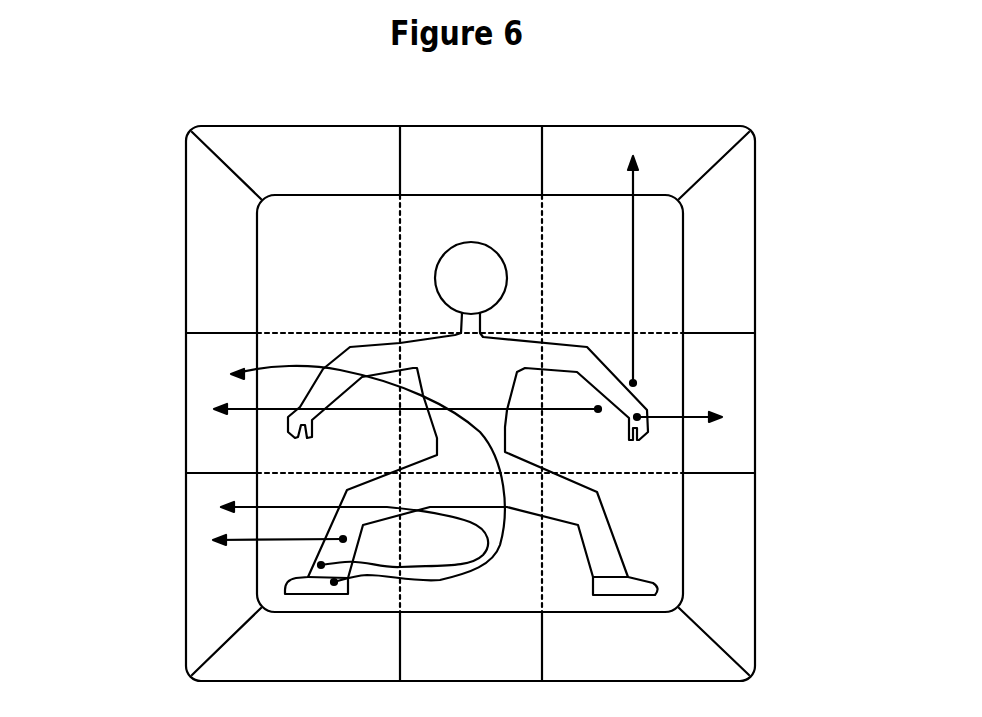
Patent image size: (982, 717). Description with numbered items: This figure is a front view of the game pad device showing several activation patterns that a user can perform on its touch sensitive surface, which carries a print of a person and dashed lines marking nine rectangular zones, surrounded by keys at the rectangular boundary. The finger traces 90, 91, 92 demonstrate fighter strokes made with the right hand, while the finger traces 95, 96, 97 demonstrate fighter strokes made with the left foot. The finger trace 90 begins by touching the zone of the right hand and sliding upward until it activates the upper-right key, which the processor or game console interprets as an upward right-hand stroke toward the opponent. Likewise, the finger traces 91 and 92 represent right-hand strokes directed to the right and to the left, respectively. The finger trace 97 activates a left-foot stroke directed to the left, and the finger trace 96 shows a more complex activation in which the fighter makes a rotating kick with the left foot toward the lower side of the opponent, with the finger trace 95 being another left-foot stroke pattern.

The finger trace 90 is at (640, 274).
The finger trace 91 is at (663, 413).
The finger trace 92 is at (578, 417).
The finger trace 95 is at (295, 360).
The finger trace 96 is at (294, 494).
The finger trace 97 is at (277, 550).